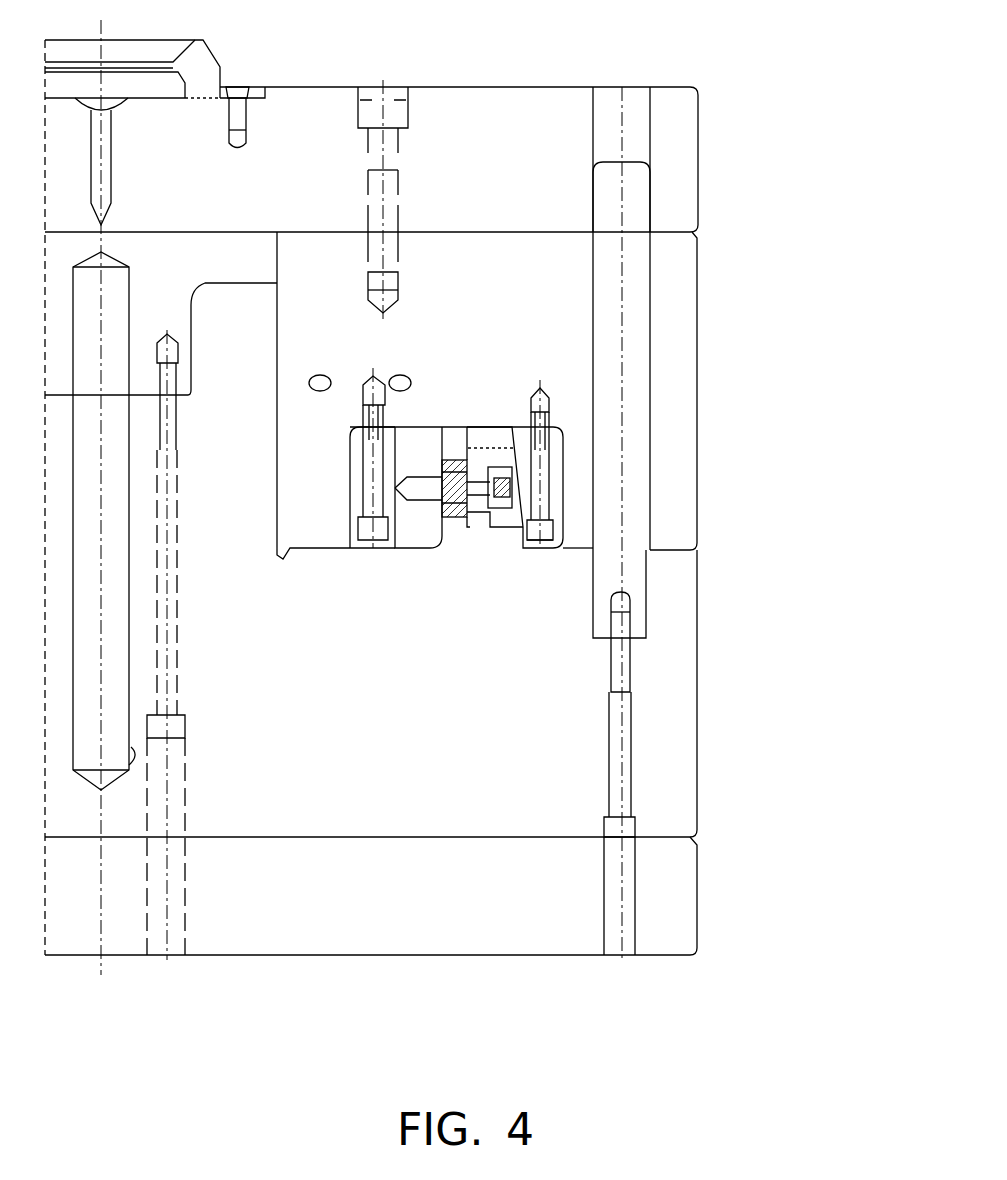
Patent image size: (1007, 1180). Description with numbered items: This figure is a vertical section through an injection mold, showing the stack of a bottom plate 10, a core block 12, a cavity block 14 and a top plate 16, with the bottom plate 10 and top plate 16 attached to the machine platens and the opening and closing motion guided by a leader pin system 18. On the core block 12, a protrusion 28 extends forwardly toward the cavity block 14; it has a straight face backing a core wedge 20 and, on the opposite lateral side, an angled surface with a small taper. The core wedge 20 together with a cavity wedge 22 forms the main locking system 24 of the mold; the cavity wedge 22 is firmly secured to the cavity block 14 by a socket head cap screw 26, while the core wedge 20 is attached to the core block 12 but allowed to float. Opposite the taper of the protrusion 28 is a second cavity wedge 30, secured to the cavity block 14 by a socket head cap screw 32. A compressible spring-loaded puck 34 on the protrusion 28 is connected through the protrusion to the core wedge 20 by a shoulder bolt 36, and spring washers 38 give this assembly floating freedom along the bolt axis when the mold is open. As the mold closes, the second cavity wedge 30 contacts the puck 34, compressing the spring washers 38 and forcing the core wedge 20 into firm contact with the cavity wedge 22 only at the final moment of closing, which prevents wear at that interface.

The bottom plate 10 is at (660, 915).
The core block 12 is at (660, 808).
The cavity block 14 is at (538, 268).
The top plate 16 is at (662, 118).
The leader pin system 18 is at (630, 268).
The core wedge 20 is at (418, 455).
The cavity wedge 22 is at (485, 517).
The main locking system 24 is at (780, 278).
The socket head cap screw 26 is at (367, 527).
The protrusion 28 is at (480, 438).
The second cavity wedge 30 is at (556, 460).
The socket head cap screw 32 is at (548, 528).
The spring-loaded puck 34 is at (388, 496).
The shoulder bolt 36 is at (512, 483).
The spring washer 38 is at (450, 513).